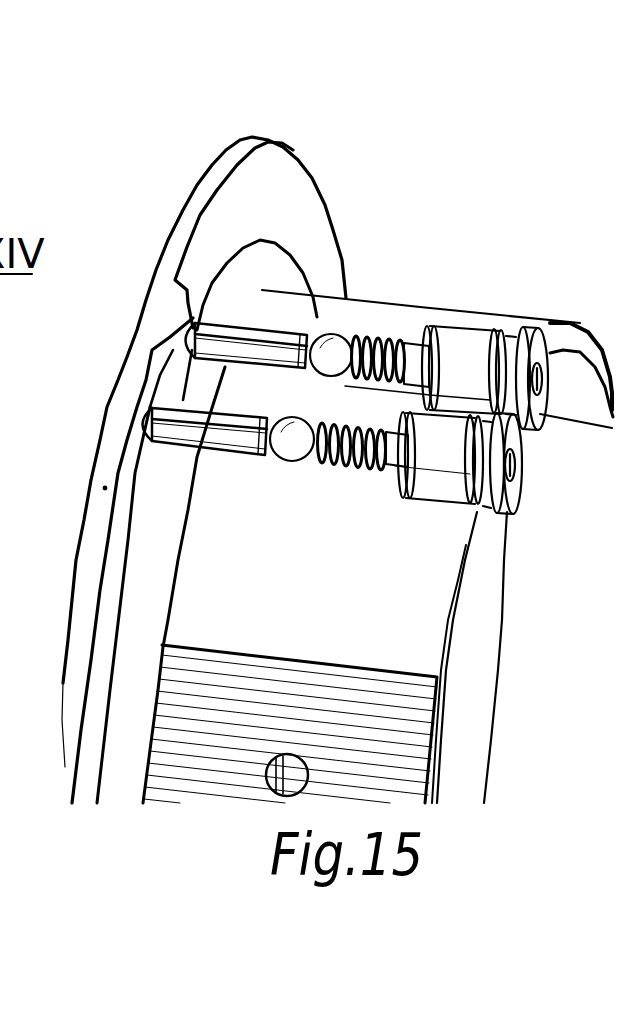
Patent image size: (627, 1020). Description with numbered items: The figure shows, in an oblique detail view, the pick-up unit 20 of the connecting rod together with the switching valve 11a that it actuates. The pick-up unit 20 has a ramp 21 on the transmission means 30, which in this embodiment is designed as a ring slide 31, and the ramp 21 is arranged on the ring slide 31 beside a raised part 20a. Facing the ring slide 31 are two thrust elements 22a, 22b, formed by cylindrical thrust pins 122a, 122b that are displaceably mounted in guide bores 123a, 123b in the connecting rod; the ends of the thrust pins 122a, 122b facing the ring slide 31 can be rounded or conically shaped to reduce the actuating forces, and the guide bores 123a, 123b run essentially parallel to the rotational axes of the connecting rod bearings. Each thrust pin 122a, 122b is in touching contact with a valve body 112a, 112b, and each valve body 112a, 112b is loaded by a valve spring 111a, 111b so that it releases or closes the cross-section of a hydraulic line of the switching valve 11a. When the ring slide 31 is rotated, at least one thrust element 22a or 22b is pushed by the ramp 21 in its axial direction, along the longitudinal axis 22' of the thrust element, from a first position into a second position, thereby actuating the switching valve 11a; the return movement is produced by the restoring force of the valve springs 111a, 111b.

The transmission means 30 is at (238, 126).
The pick-up unit 20 is at (148, 335).
The raised part 20a is at (170, 310).
The ramp 21 is at (187, 292).
The ring slide 31 is at (118, 414).
The longitudinal axis 22' is at (150, 412).
The thrust element 22a is at (271, 316).
The thrust pin 122a is at (305, 343).
The guide bore 123a is at (303, 382).
The valve spring 111a is at (465, 323).
The valve body 112a is at (387, 329).
The switching valve 11a is at (358, 590).
The thrust element 22b is at (260, 475).
The thrust pin 122b is at (233, 446).
The guide bore 123b is at (250, 397).
The valve spring 111b is at (350, 465).
The valve body 112b is at (287, 440).